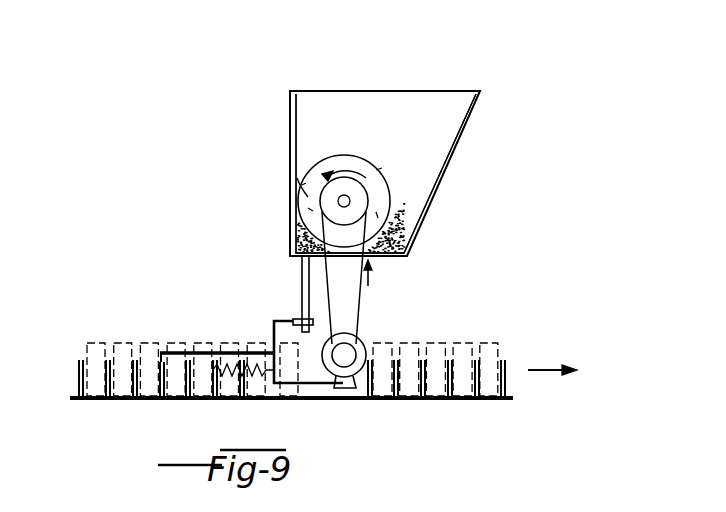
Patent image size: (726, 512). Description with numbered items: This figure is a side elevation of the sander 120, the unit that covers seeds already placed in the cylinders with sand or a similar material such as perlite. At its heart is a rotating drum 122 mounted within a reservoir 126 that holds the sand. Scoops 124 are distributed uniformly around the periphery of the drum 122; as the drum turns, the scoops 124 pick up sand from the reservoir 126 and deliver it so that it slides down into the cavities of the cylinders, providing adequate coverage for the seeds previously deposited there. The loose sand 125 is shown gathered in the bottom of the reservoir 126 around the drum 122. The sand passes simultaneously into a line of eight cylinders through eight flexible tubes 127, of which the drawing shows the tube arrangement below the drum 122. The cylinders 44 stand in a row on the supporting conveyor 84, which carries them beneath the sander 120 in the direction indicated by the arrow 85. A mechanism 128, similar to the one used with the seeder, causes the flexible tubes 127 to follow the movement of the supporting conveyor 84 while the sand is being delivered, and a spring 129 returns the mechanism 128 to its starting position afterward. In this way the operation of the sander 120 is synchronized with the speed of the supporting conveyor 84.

The sander 120 is at (482, 111).
The rotating drum 122 is at (353, 160).
The scoops 124 is at (305, 178).
The granular material 125 is at (410, 220).
The reservoir 126 is at (417, 150).
The flexible tubes 127 is at (300, 274).
The mechanism 128 is at (191, 347).
The spring 129 is at (256, 401).
The containers 44 is at (487, 343).
The supporting conveyor 84 is at (456, 400).
The direction of travel arrow 85 is at (503, 382).